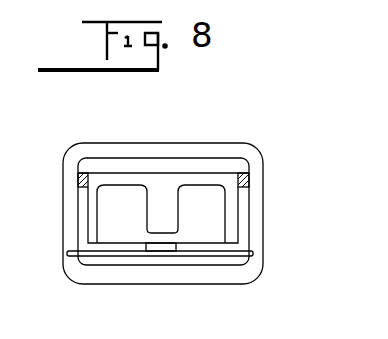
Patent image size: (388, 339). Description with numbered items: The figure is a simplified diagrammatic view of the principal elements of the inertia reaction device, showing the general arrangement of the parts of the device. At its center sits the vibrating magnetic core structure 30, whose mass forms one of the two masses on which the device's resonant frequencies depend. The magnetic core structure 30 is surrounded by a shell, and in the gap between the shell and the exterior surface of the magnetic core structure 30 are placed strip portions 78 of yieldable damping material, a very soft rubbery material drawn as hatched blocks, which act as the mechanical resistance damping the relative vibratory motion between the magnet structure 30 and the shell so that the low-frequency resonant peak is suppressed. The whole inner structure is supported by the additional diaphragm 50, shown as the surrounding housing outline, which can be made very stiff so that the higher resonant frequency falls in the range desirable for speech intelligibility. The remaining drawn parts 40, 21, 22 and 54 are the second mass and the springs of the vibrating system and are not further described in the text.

The magnetic core structure 30 is at (160, 183).
The strip portions of yieldable damping material 78 is at (243, 176).
The inner housing wall G-1 40 is at (207, 243).
The plate L-3 21 is at (256, 246).
The plate L-3 22 is at (209, 247).
The block L-2 54 is at (163, 248).
The additional diaphragm 50 is at (227, 257).